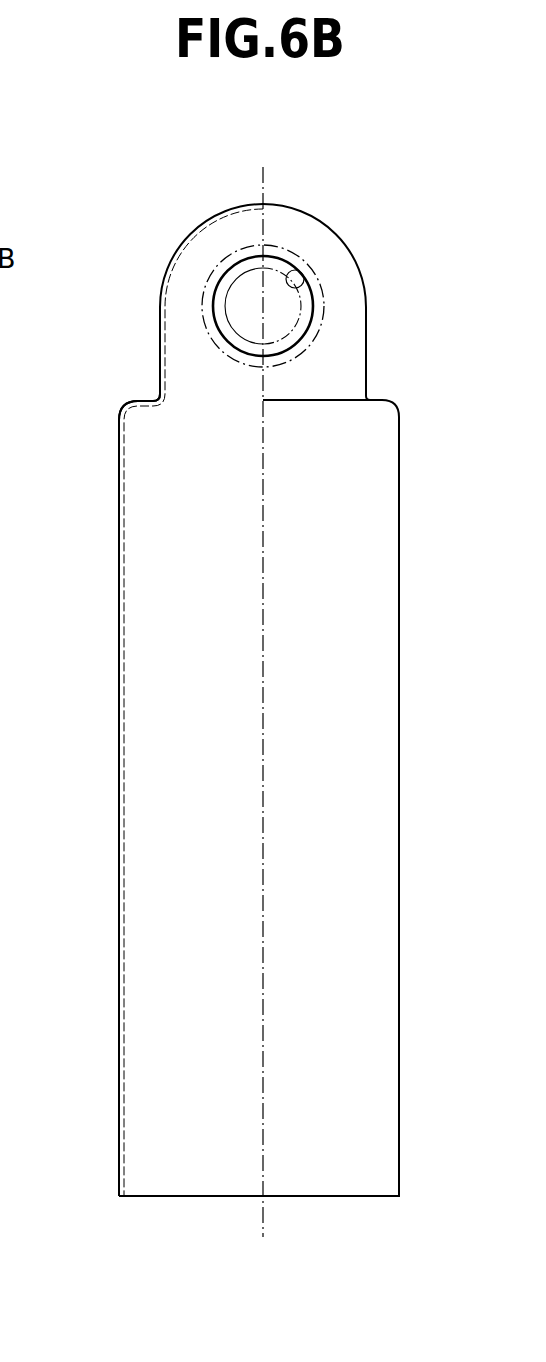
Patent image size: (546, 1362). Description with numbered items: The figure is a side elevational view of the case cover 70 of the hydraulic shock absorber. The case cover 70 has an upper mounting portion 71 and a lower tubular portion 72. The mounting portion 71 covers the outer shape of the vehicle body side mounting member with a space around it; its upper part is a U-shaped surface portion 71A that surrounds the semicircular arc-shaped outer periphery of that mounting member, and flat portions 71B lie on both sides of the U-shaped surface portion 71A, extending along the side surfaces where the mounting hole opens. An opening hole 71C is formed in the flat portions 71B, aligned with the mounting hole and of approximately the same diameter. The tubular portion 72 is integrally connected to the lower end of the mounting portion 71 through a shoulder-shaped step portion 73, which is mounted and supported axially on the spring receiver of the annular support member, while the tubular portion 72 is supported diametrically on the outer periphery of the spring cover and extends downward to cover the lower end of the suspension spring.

The case cover 70 is at (103, 597).
The mounting portion 71 is at (290, 231).
The U-shaped surface portion 71A is at (223, 207).
The flat portion 71B is at (338, 330).
The opening hole 71C is at (300, 286).
The tubular portion 72 is at (119, 788).
The step portion 73 is at (148, 401).